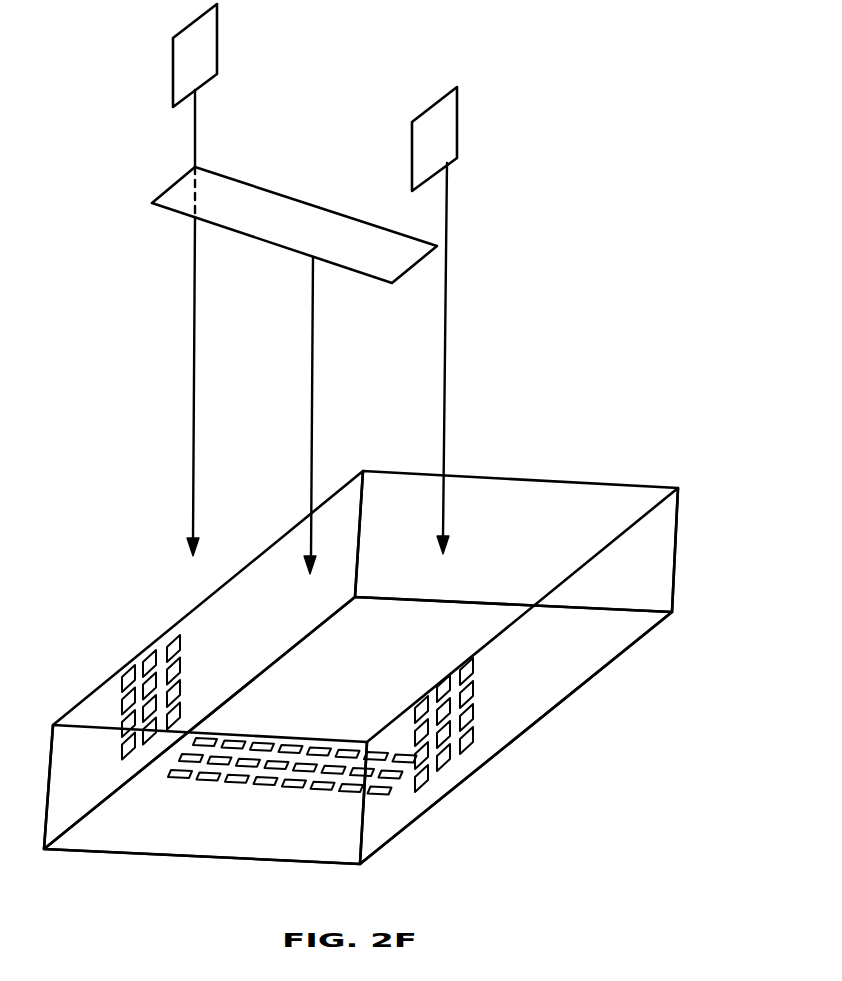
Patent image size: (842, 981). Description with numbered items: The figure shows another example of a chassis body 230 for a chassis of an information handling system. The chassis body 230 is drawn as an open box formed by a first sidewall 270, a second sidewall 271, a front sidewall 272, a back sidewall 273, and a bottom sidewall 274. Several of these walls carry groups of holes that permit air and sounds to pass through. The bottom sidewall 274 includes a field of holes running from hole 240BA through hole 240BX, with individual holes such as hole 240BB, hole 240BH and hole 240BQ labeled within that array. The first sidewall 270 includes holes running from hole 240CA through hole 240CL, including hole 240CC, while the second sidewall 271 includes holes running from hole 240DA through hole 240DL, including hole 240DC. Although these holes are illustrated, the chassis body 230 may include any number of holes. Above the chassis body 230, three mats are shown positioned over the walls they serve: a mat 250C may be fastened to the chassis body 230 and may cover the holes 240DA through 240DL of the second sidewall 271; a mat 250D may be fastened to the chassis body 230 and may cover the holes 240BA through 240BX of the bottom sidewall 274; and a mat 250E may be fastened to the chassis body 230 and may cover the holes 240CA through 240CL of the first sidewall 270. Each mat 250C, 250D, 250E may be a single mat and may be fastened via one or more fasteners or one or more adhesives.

The chassis body 230 is at (388, 657).
The first sidewall 270 is at (655, 562).
The second sidewall 271 is at (259, 600).
The front sidewall 272 is at (273, 837).
The back sidewall 273 is at (412, 507).
The bottom sidewall 274 is at (562, 658).
The mat 250C is at (172, 80).
The mat 250D is at (262, 183).
The mat 250E is at (457, 120).
The hole 240BA is at (198, 737).
The hole 240BB is at (238, 742).
The hole 240BH is at (398, 766).
The hole 240BQ is at (172, 778).
The hole 240BX is at (378, 803).
The hole 240CA is at (427, 693).
The hole 240CC is at (473, 661).
The hole 240CL is at (478, 748).
The hole 240DA is at (123, 677).
The hole 240DC is at (168, 643).
The hole 240DL is at (187, 722).